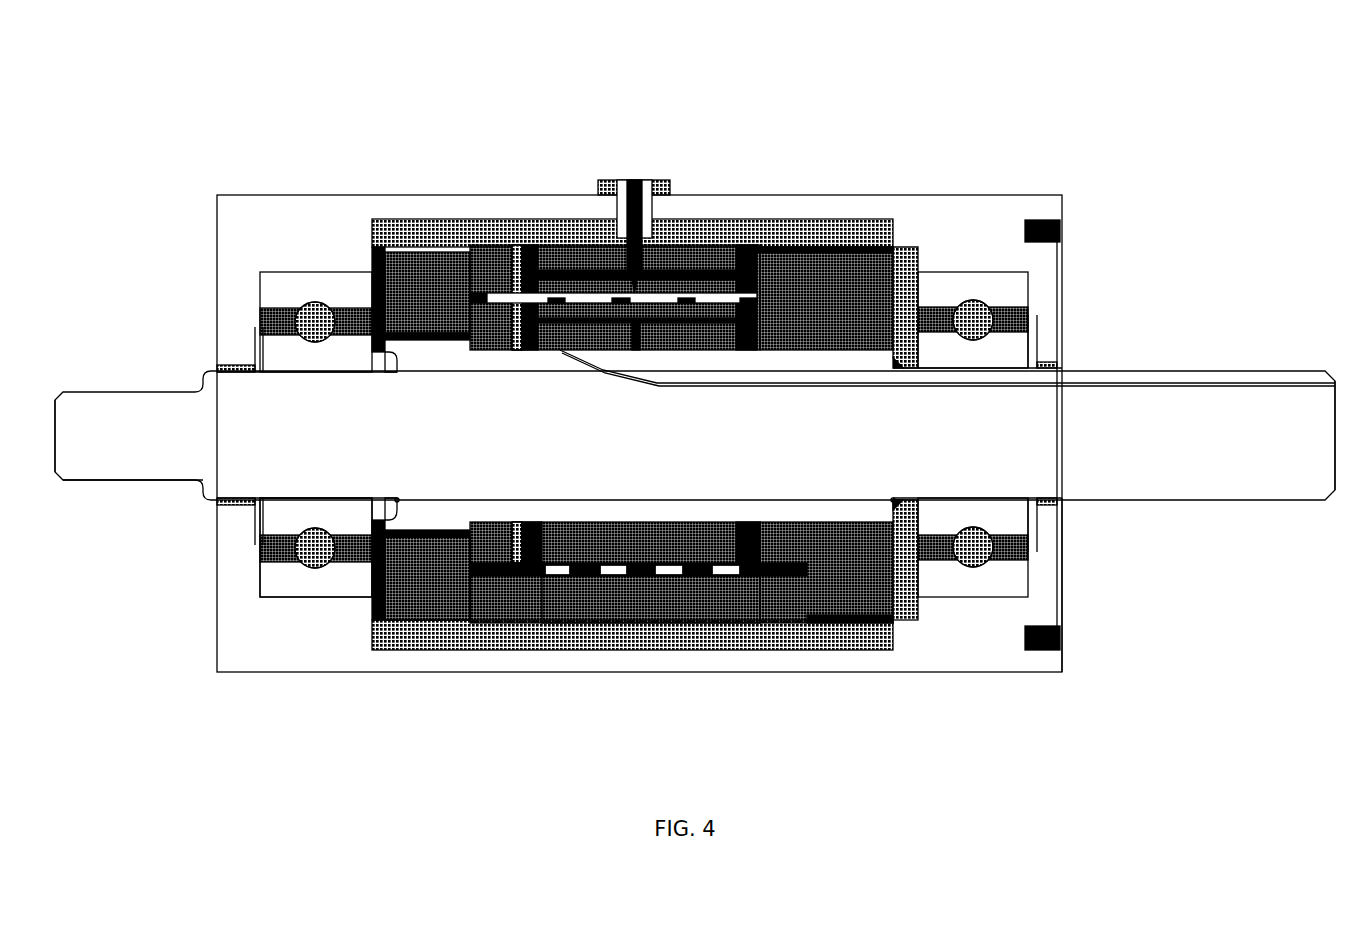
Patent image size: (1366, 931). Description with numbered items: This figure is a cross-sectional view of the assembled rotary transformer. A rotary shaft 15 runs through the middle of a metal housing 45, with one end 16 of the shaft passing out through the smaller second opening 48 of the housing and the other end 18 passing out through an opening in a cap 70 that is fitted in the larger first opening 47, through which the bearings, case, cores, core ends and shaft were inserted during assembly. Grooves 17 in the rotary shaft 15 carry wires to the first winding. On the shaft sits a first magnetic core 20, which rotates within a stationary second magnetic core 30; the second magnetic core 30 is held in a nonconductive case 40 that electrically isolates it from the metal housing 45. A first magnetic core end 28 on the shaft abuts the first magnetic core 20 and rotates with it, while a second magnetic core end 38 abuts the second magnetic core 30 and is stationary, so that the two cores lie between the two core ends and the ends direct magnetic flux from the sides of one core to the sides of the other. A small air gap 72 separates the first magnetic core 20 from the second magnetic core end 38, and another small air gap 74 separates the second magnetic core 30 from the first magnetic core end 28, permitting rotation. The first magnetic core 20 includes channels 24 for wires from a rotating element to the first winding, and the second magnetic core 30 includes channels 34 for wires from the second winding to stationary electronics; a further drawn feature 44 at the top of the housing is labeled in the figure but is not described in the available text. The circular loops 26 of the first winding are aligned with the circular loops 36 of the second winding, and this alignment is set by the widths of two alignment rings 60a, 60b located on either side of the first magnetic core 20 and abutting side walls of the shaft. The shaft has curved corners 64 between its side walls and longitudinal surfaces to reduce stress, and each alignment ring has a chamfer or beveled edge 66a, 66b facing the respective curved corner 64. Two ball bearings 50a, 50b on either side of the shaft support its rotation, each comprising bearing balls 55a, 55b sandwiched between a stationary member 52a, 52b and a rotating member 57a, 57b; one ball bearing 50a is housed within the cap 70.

The rotary shaft 15 is at (1172, 370).
The end of the rotary shaft 16 is at (117, 397).
The grooves 17 is at (1195, 385).
The other end of the rotary shaft 18 is at (1290, 356).
The first magnetic core 20 is at (805, 550).
The channels 24 is at (722, 300).
The circular loops 26 is at (723, 563).
The first magnetic core end 28 is at (866, 583).
The second magnetic core 30 is at (745, 605).
The channels 34 is at (557, 275).
The circular loops 36 is at (727, 576).
The second magnetic core end 38 is at (418, 250).
The nonconductive case 40 is at (528, 232).
The sensor 44 is at (637, 185).
The metal housing 45 is at (873, 197).
The first opening 47 is at (1105, 548).
The second opening 48 is at (160, 492).
The ball bearing 50a is at (987, 255).
The ball bearing 50b is at (330, 262).
The stationary member 52a is at (1017, 277).
The stationary member 52b is at (293, 272).
The bearing balls 55a is at (986, 300).
The bearing balls 55b is at (312, 318).
The rotating member 57a is at (1013, 335).
The rotating member 57b is at (278, 350).
The alignment ring 60a is at (1045, 567).
The alignment ring 60b is at (362, 512).
The curved corners 64 is at (400, 497).
The chamfer or beveled edge 66a is at (900, 498).
The chamfer or beveled edge 66b is at (392, 500).
The cap 70 is at (950, 218).
The air gap 72 is at (468, 600).
The air gap 74 is at (806, 290).